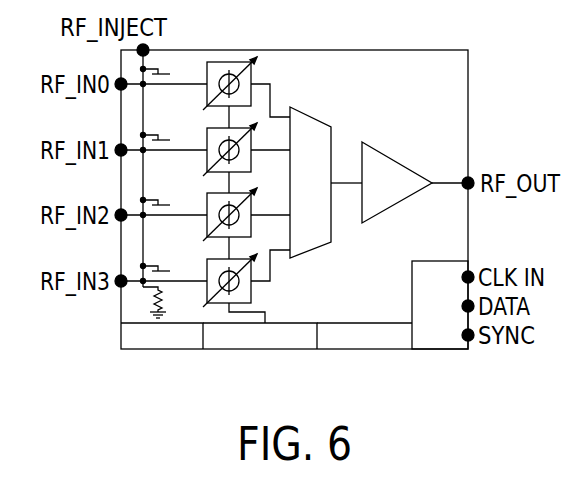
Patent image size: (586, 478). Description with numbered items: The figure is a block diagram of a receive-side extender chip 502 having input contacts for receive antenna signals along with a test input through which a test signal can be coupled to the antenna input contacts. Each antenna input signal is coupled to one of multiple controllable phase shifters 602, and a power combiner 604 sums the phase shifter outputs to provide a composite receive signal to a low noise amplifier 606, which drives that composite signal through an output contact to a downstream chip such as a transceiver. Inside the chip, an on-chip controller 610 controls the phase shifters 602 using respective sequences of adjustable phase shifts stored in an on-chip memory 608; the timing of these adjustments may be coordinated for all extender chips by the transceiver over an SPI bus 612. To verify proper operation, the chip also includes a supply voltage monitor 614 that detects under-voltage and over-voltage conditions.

The receive-side extender chip 502 is at (445, 50).
The controllable phase shifters 602 is at (258, 45).
The power combiner 604 is at (330, 126).
The low noise amplifier 606 is at (390, 158).
The on-chip memory 608 is at (160, 349).
The on-chip controller 610 is at (257, 349).
The SPI bus 612 is at (450, 349).
The supply voltage monitor 614 is at (353, 349).